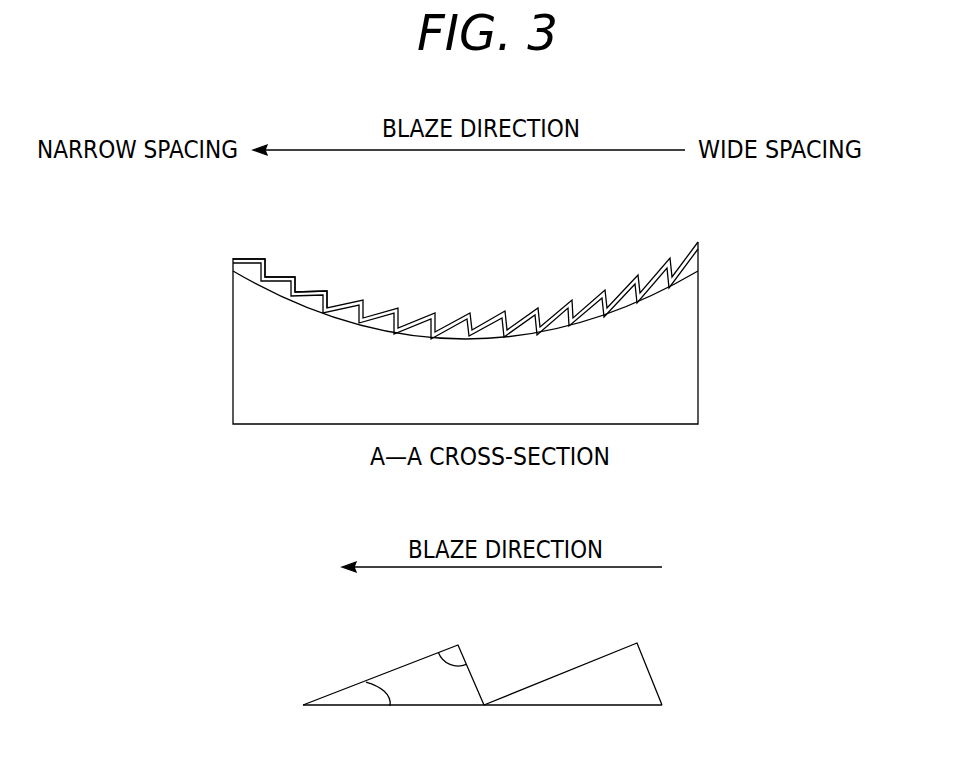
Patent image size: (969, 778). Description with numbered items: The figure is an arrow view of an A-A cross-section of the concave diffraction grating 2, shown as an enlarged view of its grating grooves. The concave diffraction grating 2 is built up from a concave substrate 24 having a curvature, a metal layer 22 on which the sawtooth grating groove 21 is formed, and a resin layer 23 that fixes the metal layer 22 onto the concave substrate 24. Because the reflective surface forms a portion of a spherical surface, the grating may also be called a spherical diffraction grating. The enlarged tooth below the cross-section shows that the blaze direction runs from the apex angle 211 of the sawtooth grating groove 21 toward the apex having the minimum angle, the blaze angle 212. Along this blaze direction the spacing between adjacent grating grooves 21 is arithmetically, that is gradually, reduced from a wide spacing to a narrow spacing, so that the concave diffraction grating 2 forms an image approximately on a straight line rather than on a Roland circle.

The concave diffraction grating 2 is at (398, 240).
The grating groove 21 is at (285, 276).
The apex angle 211 is at (467, 657).
The blaze angle 212 is at (390, 706).
The metal layer 22 is at (488, 320).
The resin layer 23 is at (605, 307).
The concave substrate 24 is at (685, 378).